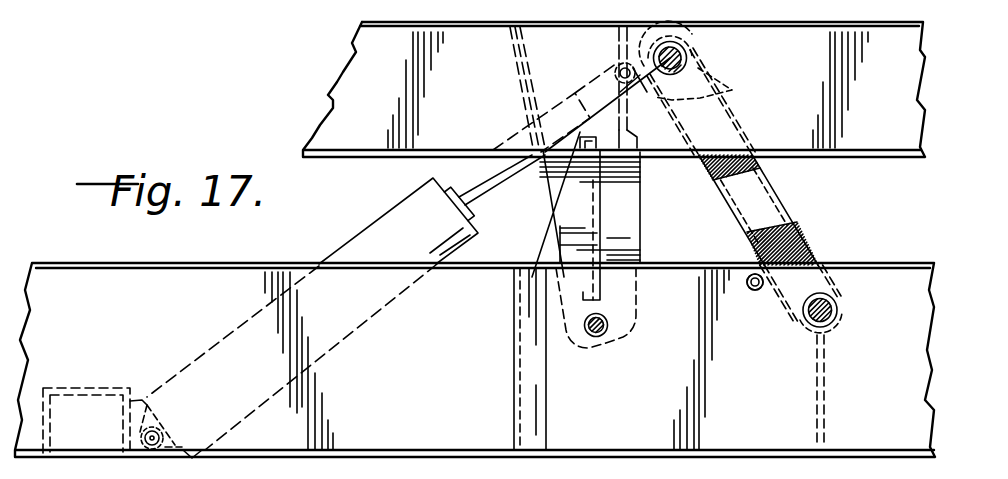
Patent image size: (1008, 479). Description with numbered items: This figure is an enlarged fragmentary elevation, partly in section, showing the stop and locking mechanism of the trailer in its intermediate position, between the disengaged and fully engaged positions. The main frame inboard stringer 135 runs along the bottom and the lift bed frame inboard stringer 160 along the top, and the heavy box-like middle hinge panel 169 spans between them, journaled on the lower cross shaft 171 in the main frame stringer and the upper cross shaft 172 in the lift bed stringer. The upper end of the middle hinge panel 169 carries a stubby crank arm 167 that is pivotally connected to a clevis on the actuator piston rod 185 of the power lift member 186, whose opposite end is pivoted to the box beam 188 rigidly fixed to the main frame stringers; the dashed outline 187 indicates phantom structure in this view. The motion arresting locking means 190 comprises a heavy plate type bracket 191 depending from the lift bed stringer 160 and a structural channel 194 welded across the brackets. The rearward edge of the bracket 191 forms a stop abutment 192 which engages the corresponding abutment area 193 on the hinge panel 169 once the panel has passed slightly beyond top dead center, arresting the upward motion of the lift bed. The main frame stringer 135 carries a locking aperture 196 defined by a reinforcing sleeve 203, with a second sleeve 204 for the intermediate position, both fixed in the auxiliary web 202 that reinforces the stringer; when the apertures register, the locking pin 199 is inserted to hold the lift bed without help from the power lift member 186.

The inboard stringer 135 is at (103, 262).
The inboard stringer 160 is at (345, 80).
The crank arm 167 is at (730, 90).
The middle hinge panel 169 is at (797, 184).
The cross shaft 171 is at (839, 302).
The cross shaft 172 is at (692, 43).
The actuator piston rod 185 is at (477, 180).
The power lift member 186 is at (350, 240).
The phantom bracket 187 is at (587, 85).
The box beam 188 is at (100, 387).
The motion arresting locking means 190 is at (553, 236).
The plate type bracket 191 is at (562, 203).
The stop abutment 192 is at (635, 168).
The abutment area 193 is at (737, 226).
The structural channel 194 is at (602, 217).
The locking aperture 196 is at (755, 270).
The locking pin 199 is at (599, 340).
The auxiliary web 202 is at (549, 397).
The reinforcing sleeve 203 is at (754, 292).
The reinforcing sleeve 204 is at (606, 322).